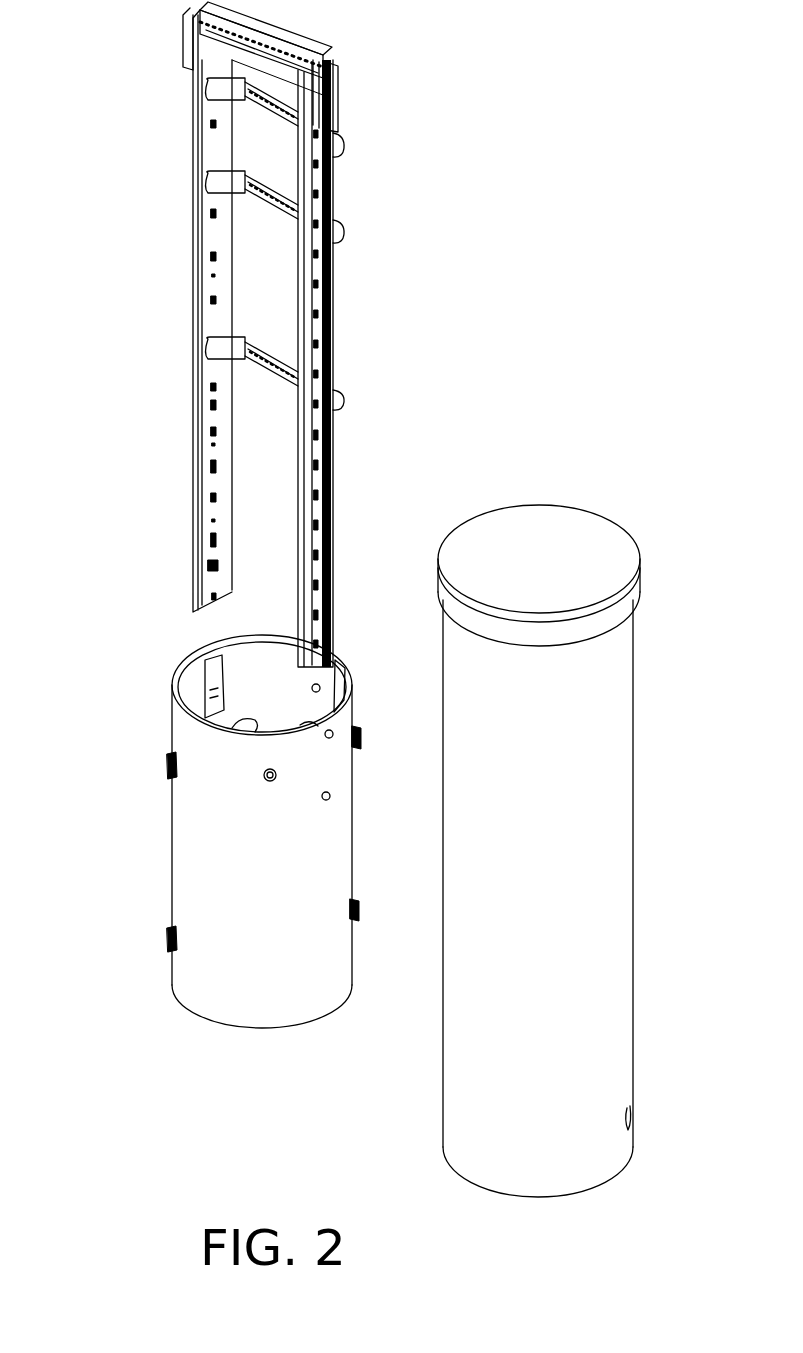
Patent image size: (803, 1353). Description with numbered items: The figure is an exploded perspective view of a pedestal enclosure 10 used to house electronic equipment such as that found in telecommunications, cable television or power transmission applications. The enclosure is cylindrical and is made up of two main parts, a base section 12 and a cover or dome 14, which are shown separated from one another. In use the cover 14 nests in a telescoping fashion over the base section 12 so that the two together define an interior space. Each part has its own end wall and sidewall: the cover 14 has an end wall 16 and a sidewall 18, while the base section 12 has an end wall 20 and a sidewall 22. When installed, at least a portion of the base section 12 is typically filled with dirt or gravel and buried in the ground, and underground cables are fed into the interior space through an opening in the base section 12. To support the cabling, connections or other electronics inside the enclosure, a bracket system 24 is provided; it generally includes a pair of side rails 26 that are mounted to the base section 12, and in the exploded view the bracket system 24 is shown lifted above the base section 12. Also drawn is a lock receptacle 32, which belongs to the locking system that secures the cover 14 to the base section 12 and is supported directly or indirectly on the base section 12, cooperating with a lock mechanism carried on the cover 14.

The pedestal enclosure 10 is at (536, 238).
The base section 12 is at (122, 884).
The cover 14 is at (690, 833).
The end wall 16 is at (590, 558).
The sidewall 18 is at (600, 1028).
The end wall 20 is at (252, 1032).
The sidewall 22 is at (200, 967).
The bracket system 24 is at (366, 361).
The side rails 26 is at (335, 160).
The lock receptacle 32 is at (343, 86).